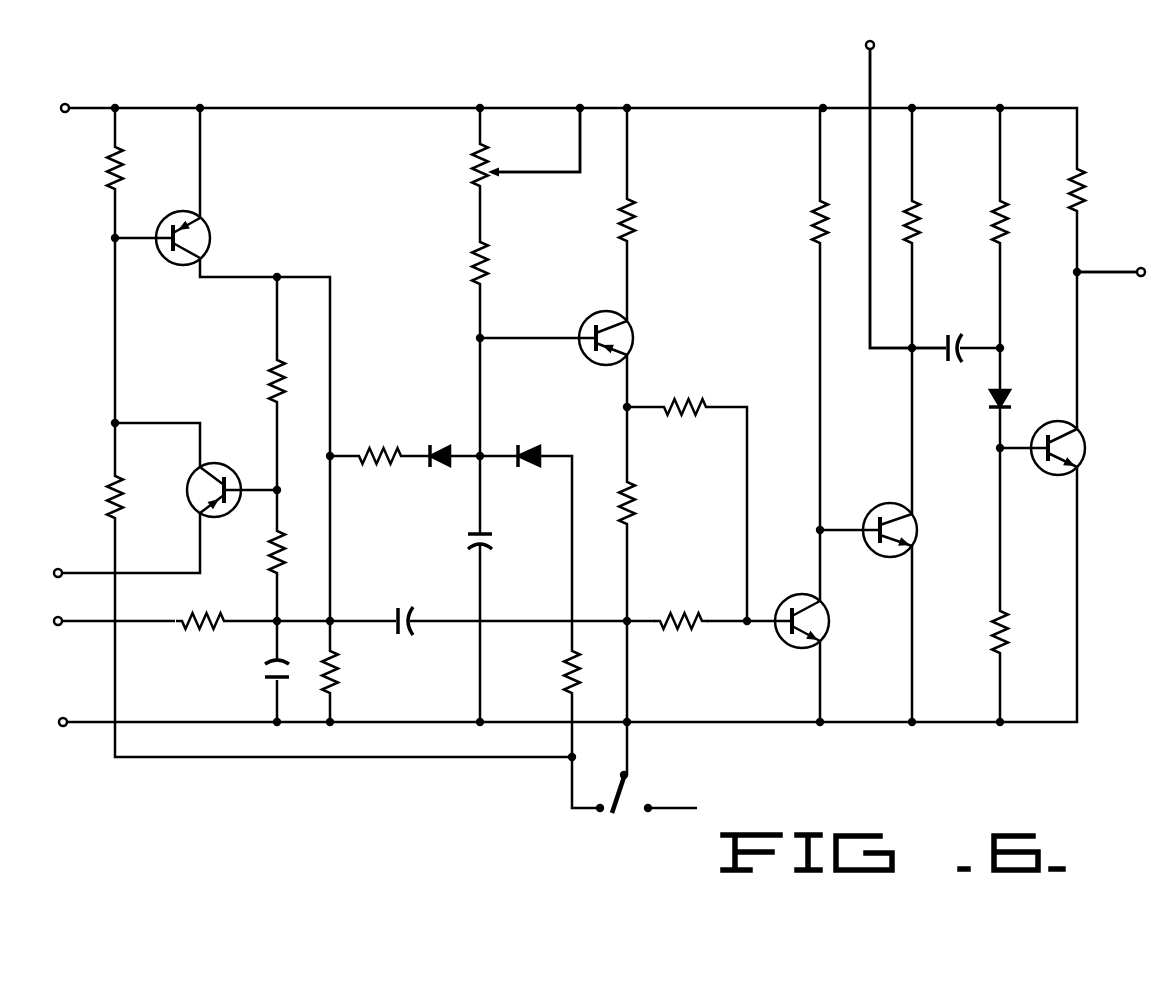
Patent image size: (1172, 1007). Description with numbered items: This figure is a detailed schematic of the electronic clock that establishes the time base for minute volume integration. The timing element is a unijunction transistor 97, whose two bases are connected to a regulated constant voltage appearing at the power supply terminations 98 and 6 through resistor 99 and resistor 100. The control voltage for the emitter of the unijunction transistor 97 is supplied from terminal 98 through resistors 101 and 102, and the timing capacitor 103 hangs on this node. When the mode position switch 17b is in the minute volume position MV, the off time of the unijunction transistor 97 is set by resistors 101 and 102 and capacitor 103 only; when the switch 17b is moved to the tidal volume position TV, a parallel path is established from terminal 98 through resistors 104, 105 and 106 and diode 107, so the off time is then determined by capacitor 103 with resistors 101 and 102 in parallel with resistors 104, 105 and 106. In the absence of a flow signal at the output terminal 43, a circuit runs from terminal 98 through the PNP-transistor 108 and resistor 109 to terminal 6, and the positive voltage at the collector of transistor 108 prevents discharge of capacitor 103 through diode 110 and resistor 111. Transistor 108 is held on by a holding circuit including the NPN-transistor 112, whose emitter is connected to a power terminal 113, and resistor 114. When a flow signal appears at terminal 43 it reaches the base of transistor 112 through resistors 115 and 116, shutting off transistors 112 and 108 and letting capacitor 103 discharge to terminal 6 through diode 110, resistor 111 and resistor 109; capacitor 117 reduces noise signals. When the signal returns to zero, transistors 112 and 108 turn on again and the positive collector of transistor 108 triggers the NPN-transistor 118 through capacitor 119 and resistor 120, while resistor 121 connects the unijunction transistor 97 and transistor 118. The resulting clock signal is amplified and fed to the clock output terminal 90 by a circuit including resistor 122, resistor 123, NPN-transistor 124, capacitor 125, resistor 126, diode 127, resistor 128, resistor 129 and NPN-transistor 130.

The terminal 98 is at (61, 108).
The resistor 104 is at (107, 170).
The PNP-transistor 108 is at (209, 231).
The resistor 105 is at (107, 501).
The NPN-transistor 112 is at (219, 451).
The resistor 114 is at (270, 386).
The resistor 116 is at (282, 549).
The power terminal 113 is at (54, 573).
The output terminal 43 is at (54, 621).
The resistor 115 is at (220, 629).
The capacitor 117 is at (263, 668).
The resistor 109 is at (340, 674).
The terminal 6 is at (59, 723).
The resistor 101 is at (472, 171).
The resistor 102 is at (475, 264).
The resistor 99 is at (635, 218).
The unijunction transistor 97 is at (634, 336).
The resistor 111 is at (398, 431).
The diode 110 is at (458, 431).
The diode 107 is at (548, 431).
The capacitor 103 is at (467, 538).
The capacitor 119 is at (410, 590).
The resistor 100 is at (637, 502).
The resistor 106 is at (562, 673).
The resistor 121 is at (710, 383).
The resistor 120 is at (702, 601).
The NPN-transistor 118 is at (830, 625).
The resistor 122 is at (814, 219).
The NPN-transistor 124 is at (918, 530).
The resistor 123 is at (921, 222).
The capacitor 125 is at (965, 314).
The resistor 126 is at (1008, 222).
The diode 127 is at (1009, 396).
The NPN-transistor 130 is at (1086, 450).
The resistor 129 is at (1088, 189).
The clock output terminal 90 is at (1143, 276).
The resistor 128 is at (1008, 630).
The mode position switch 17b is at (633, 814).